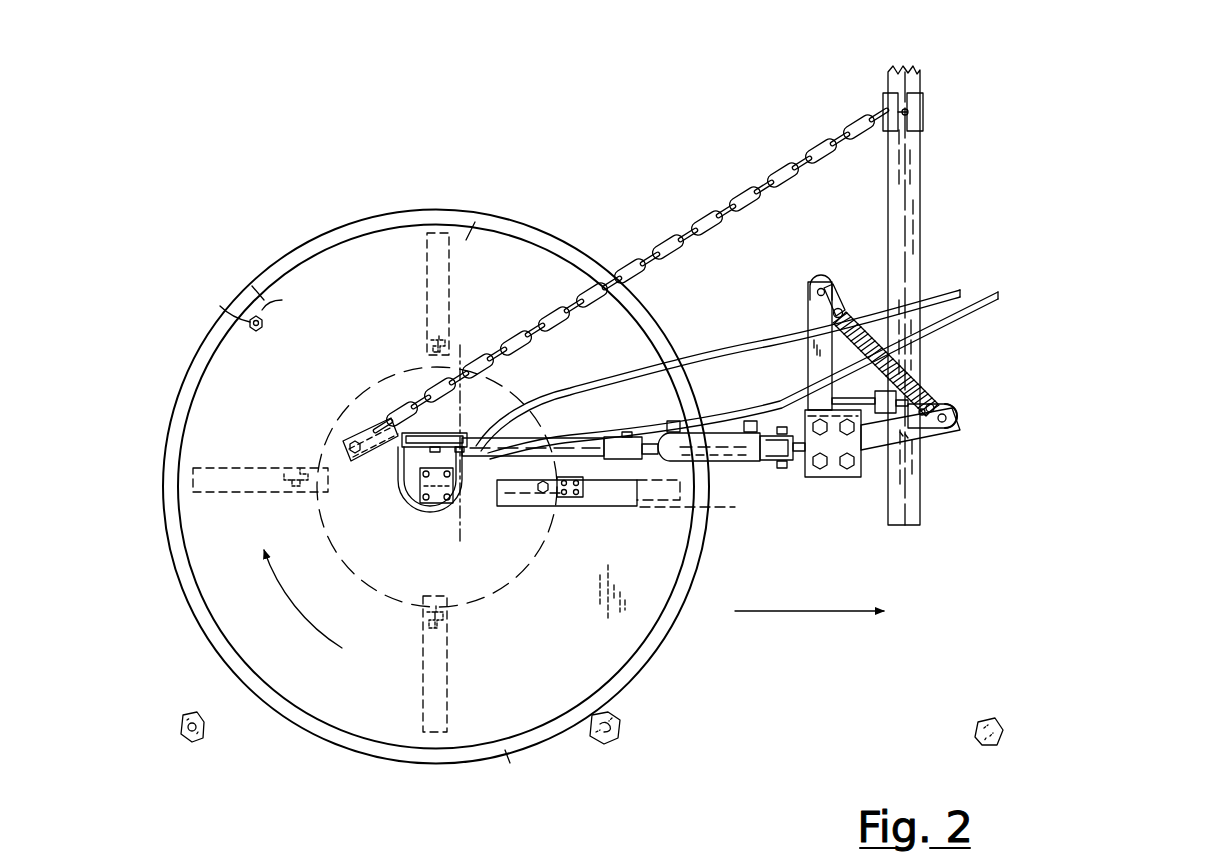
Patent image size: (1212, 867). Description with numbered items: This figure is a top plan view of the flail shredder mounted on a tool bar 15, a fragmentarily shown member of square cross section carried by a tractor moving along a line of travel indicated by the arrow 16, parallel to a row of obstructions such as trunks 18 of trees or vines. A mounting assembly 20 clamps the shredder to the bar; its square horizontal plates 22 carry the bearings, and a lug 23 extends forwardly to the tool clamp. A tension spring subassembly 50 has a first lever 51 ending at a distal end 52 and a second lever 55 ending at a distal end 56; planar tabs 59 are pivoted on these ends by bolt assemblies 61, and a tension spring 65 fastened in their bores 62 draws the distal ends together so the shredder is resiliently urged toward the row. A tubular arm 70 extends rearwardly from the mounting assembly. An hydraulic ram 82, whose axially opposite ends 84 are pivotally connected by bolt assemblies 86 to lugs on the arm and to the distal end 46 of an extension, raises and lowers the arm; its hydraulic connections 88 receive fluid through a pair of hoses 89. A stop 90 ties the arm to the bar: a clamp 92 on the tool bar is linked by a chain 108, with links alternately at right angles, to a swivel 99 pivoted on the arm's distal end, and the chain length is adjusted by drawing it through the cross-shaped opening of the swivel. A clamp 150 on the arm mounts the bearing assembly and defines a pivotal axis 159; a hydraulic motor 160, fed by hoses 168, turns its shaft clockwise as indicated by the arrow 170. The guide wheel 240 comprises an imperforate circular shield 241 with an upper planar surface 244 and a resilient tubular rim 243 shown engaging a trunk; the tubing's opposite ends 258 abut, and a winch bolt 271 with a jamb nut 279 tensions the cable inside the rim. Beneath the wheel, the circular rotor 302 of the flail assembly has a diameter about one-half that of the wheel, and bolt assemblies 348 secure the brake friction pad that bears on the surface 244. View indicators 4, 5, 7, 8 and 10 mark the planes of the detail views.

The section line 4- 4 is at (1027, 292).
The section line 5- 5 is at (873, 72).
The section line 7- 7 is at (395, 484).
The section line 8- 8 is at (392, 423).
The section line 10- 10 is at (239, 374).
The tool bar 15 is at (905, 527).
The arrow 16 is at (802, 613).
The trunks 18 is at (197, 742).
The mounting assembly 20 is at (833, 483).
The horizontal plates 22 is at (823, 457).
The lug 23 is at (860, 398).
The distal end 46 is at (778, 461).
The tension spring subassembly 50 is at (984, 372).
The first lever 51 is at (916, 436).
The distal end 52 is at (960, 420).
The second lever 55 is at (808, 376).
The distal end 56 is at (815, 280).
The tabs 59 is at (840, 296).
The bolt assemblies 61 is at (812, 295).
The bore 62 is at (843, 311).
The tension spring 65 is at (926, 380).
The arm 70 is at (578, 440).
The hydraulic ram 82 is at (695, 461).
The axially opposite ends 84 is at (690, 462).
The bolt assemblies 86 is at (625, 432).
The hydraulic connections 88 is at (750, 421).
The hoses 89 is at (994, 300).
The stop 90 is at (595, 170).
The clamp 92 is at (925, 118).
The swivel 99 is at (342, 446).
The chain 108 is at (692, 222).
The clamp 150 is at (480, 430).
The pivotal axis 159 is at (466, 537).
The hydraulic motor 160 is at (437, 505).
The hoses 168 is at (720, 356).
The arrow 170 is at (298, 622).
The guide wheel 240 is at (358, 214).
The circular shield 241 is at (470, 234).
The tubular rim 243 is at (510, 756).
The upper planar surface 244 is at (542, 651).
The opposite ends 258 is at (249, 290).
The bolt 271 is at (262, 316).
The jamb nut 279 is at (220, 306).
The rotor 302 is at (520, 604).
The bolt assemblies 348 is at (580, 500).